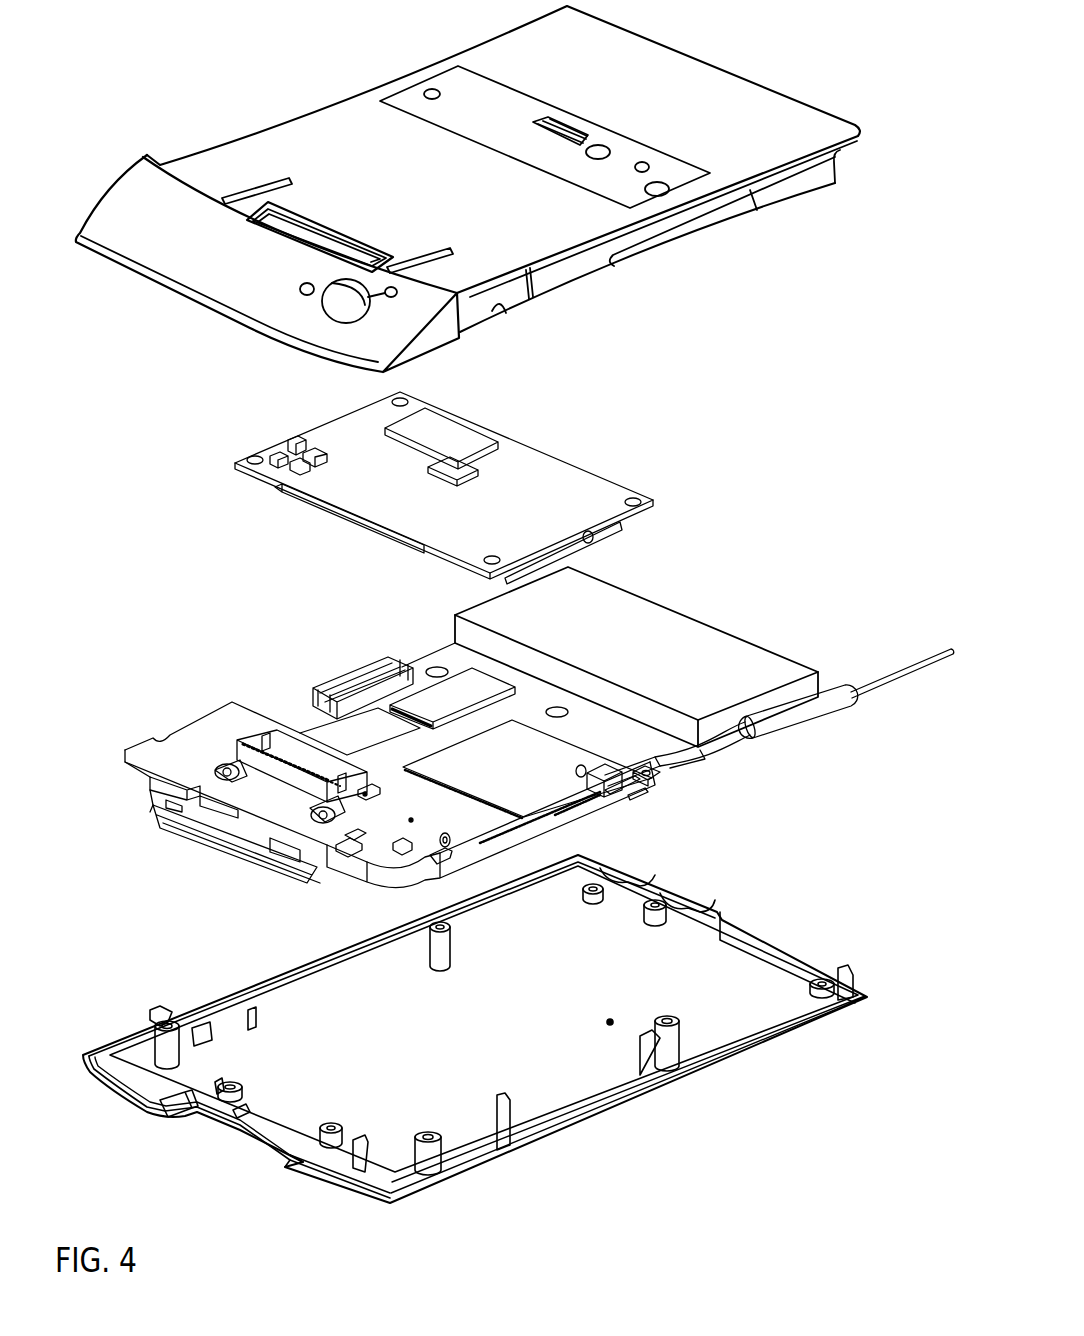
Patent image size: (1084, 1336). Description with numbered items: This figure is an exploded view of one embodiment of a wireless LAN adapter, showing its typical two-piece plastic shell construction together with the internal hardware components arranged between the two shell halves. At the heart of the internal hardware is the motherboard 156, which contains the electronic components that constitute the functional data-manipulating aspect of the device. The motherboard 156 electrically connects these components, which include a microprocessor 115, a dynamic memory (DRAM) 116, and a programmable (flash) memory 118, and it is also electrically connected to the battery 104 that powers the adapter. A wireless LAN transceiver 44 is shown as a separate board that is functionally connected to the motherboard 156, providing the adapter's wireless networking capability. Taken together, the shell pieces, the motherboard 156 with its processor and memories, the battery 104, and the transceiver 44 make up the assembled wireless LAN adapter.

The wireless LAN transceiver 44 is at (237, 455).
The battery 104 is at (682, 627).
The microprocessor 115 is at (603, 803).
The dynamic memory (DRAM) 116 is at (468, 680).
The programmable (flash) memory 118 is at (352, 738).
The motherboard 156 is at (705, 770).